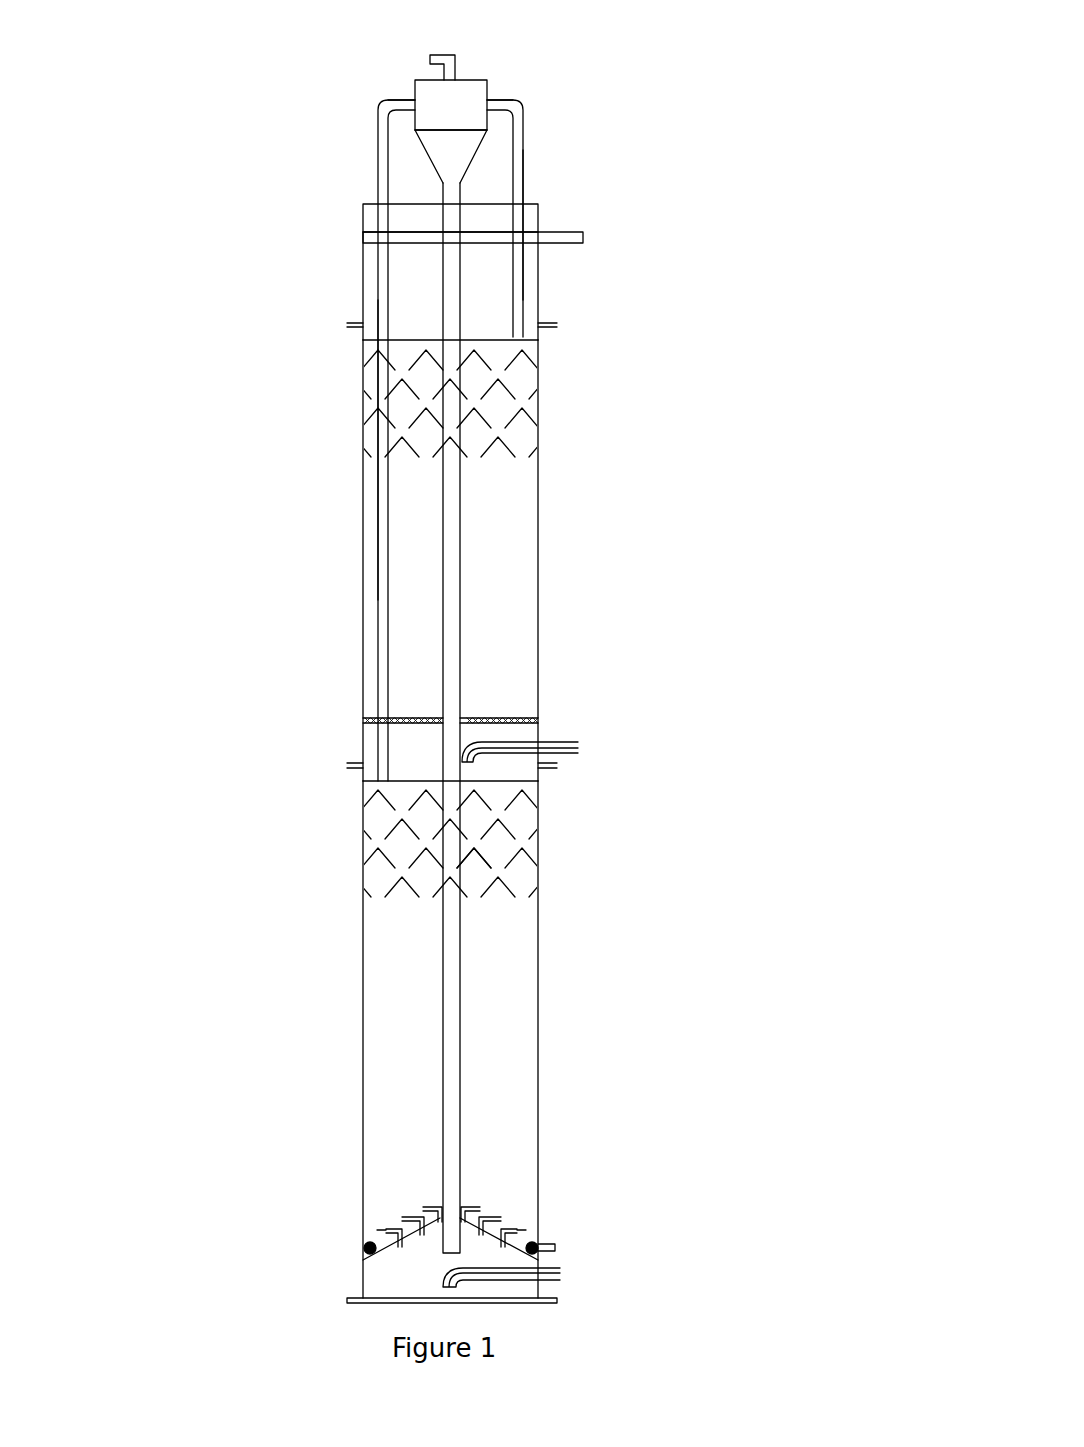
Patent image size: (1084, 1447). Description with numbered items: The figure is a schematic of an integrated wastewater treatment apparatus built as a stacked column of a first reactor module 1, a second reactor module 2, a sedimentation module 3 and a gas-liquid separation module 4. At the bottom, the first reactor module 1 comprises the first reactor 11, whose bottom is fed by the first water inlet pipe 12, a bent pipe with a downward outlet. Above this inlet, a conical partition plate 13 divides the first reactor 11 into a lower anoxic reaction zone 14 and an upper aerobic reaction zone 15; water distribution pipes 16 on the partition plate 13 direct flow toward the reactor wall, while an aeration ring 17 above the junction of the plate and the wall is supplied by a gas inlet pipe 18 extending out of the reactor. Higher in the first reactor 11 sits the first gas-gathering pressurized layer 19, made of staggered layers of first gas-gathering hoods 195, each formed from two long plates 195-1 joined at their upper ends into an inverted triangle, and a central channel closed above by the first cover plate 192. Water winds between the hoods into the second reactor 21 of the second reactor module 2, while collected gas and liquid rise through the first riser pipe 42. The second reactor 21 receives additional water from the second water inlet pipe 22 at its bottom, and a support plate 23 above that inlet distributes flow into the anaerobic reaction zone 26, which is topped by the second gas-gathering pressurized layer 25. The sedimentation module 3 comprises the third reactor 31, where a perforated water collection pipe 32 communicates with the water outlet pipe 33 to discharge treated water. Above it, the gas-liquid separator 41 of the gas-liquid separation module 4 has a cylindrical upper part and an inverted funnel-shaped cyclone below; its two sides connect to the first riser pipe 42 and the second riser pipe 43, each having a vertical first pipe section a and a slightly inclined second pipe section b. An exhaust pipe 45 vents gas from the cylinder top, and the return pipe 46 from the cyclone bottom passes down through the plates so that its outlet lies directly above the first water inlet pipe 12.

The first reactor module 1 is at (505, 1032).
The first reactor 11 is at (540, 1075).
The first water inlet pipe 12 is at (560, 1270).
The partition plate 13 is at (490, 1235).
The anoxic reaction zone 14 is at (393, 1277).
The aerobic reaction zone 15 is at (390, 1035).
The water distribution pipe 16 is at (432, 1207).
The aeration ring 17 is at (364, 1246).
The gas inlet pipe 18 is at (556, 1247).
The first gas-gathering pressurized layer 19 is at (484, 829).
The first cover plate 192 is at (405, 783).
The first gas-gathering hood 195 is at (512, 827).
The long plate 195-1 is at (463, 860).
The second reactor module 2 is at (544, 560).
The second reactor 21 is at (540, 635).
The second water inlet pipe 22 is at (520, 745).
The support plate 23 is at (495, 718).
The second gas-gathering pressurized layer 25 is at (543, 405).
The anaerobic reaction zone 26 is at (517, 567).
The sedimentation module 3 is at (508, 247).
The third reactor 31 is at (540, 288).
The water collection pipe 32 is at (405, 232).
The water outlet pipe 33 is at (553, 240).
The gas-liquid separation module 4 is at (504, 626).
The gas-liquid separator 41 is at (475, 80).
The first riser pipe 42 is at (378, 140).
The second riser pipe 43 is at (527, 157).
The exhaust pipe 45 is at (440, 55).
The return pipe 46 is at (445, 305).
The first pipe section a is at (523, 188).
The second pipe section b is at (395, 108).